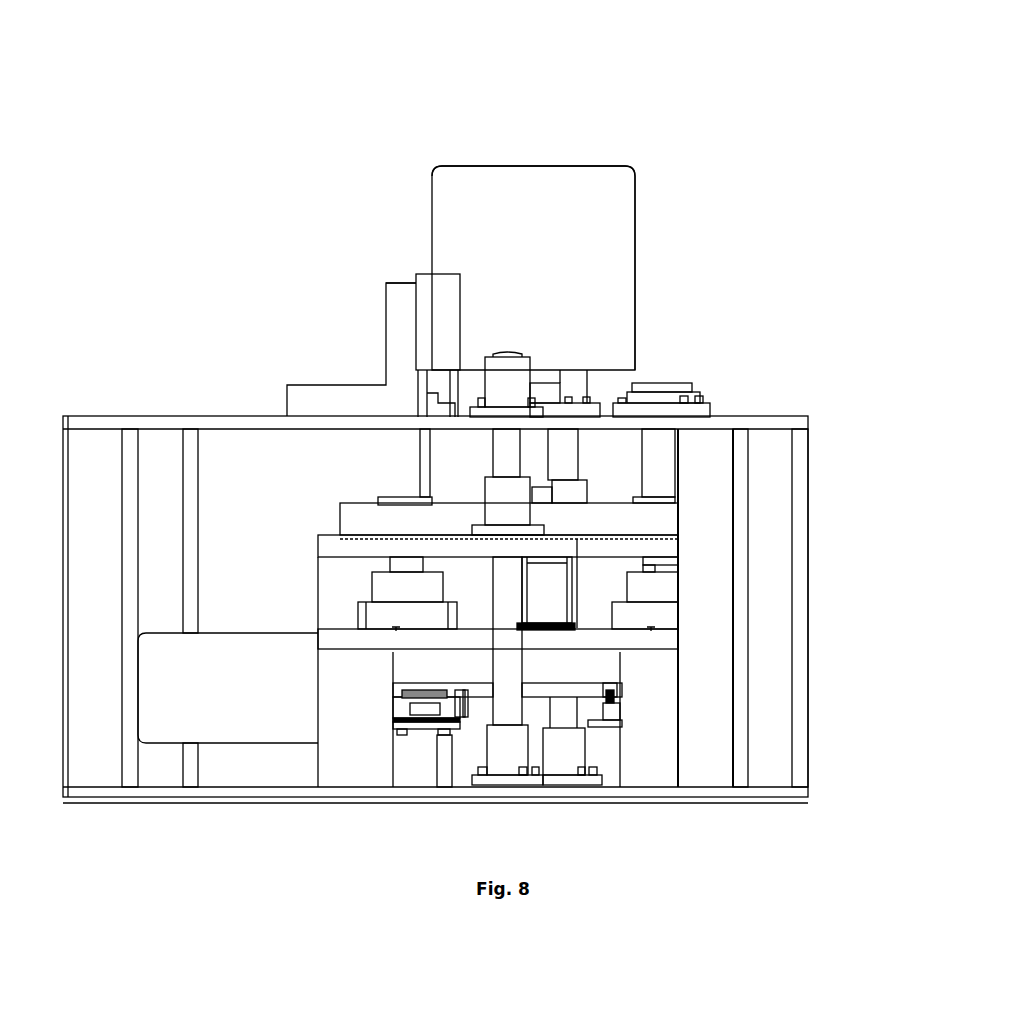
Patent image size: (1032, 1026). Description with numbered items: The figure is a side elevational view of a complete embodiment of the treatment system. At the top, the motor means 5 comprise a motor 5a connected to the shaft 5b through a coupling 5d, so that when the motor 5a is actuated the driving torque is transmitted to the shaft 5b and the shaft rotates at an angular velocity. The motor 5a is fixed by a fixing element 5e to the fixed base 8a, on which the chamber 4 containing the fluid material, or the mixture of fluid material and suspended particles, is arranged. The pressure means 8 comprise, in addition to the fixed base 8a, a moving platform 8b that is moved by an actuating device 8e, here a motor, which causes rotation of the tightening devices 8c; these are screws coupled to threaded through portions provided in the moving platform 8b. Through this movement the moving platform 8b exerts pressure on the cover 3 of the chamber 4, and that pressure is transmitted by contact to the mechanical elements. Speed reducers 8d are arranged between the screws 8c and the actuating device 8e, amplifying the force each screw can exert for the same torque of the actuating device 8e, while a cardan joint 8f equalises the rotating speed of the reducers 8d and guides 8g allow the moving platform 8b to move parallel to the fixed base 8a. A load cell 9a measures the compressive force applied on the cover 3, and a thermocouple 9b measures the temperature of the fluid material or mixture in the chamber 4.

The cover 3 is at (605, 556).
The chamber 4 is at (573, 602).
The motor means 5 is at (528, 136).
The motor 5a is at (638, 223).
The shaft 5b is at (590, 500).
The coupling 5d is at (508, 465).
The fixing element 5e is at (398, 282).
The pressure means 8 is at (293, 570).
The fixed base 8a is at (572, 634).
The moving platform 8b is at (658, 465).
The tightening devices 8c is at (415, 465).
The speed reducers 8d is at (423, 720).
The actuating device 8e is at (197, 682).
The cardan joint 8f is at (537, 697).
The guides 8g is at (563, 465).
The load cell 9a is at (610, 663).
The thermocouple 9b is at (522, 630).